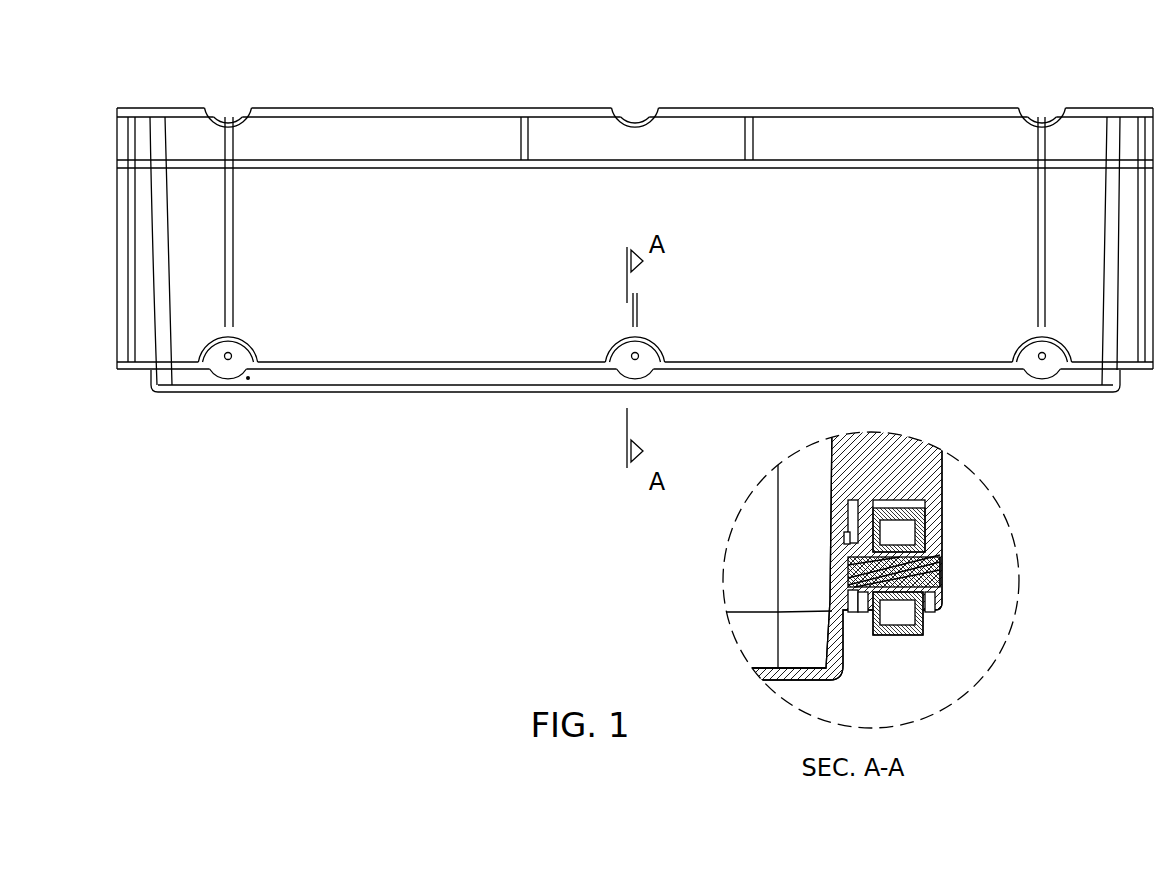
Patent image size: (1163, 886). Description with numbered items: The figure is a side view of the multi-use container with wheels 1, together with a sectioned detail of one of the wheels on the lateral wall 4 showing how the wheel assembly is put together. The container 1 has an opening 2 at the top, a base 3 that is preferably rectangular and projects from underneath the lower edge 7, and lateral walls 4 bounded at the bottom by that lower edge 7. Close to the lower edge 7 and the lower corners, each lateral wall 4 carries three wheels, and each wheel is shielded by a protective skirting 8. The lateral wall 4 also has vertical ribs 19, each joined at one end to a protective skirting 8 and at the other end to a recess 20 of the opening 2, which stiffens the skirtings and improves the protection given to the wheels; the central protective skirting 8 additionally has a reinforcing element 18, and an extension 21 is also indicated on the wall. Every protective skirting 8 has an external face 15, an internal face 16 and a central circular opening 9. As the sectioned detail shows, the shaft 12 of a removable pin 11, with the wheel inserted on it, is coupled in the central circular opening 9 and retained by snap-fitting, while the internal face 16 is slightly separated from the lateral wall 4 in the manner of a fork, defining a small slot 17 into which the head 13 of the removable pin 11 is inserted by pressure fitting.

The multi-use container with wheels 1 is at (503, 460).
The opening 2 is at (417, 107).
The base 3 is at (448, 378).
The lateral wall 4 is at (405, 278).
The lower edge 7 is at (140, 378).
The protective skirting 8 is at (215, 360).
The central circular opening 9 is at (232, 353).
The removable pin 11 is at (948, 583).
The shaft 12 is at (945, 570).
The head 13 is at (853, 614).
The external face of the protective skirting 15 is at (249, 381).
The internal face of the protective skirting 16 is at (843, 538).
The slot 17 is at (848, 520).
The reinforcing element 18 is at (638, 296).
The vertical rib 19 is at (220, 247).
The recess 20 is at (228, 115).
The extension 21 is at (590, 160).